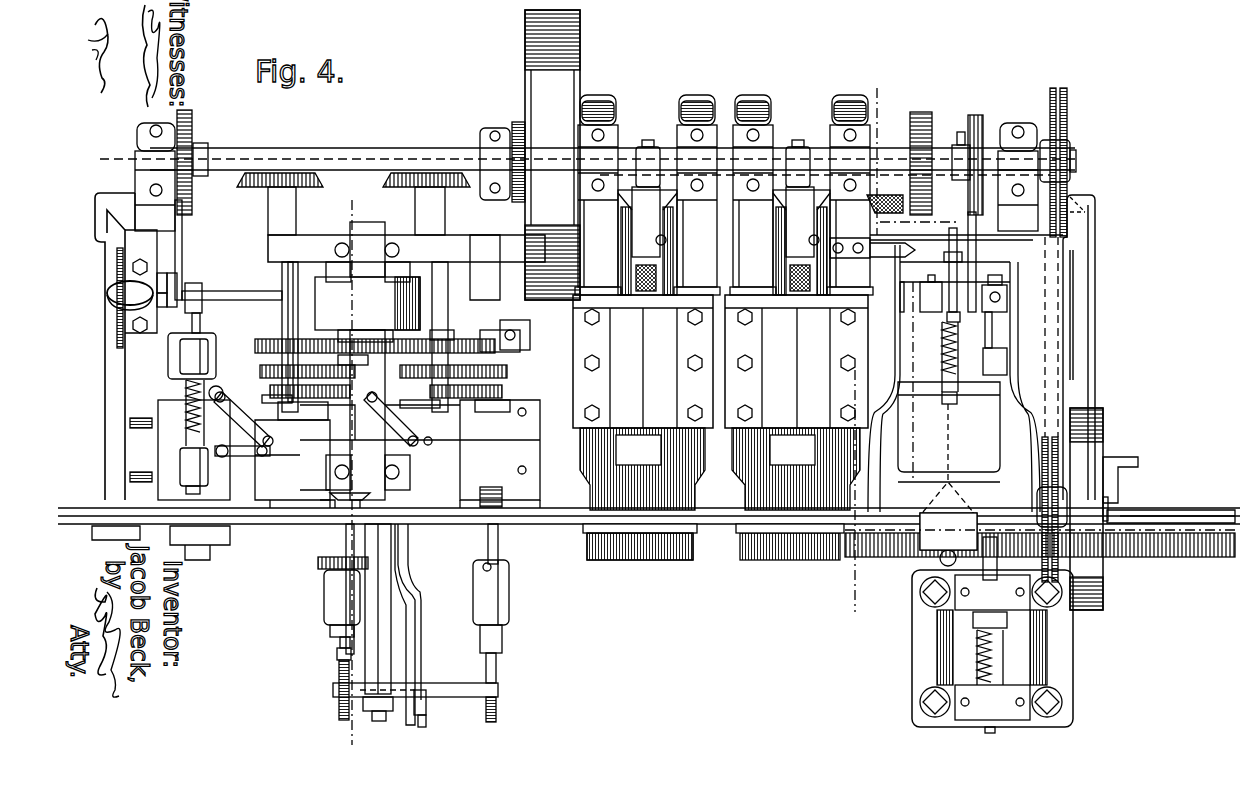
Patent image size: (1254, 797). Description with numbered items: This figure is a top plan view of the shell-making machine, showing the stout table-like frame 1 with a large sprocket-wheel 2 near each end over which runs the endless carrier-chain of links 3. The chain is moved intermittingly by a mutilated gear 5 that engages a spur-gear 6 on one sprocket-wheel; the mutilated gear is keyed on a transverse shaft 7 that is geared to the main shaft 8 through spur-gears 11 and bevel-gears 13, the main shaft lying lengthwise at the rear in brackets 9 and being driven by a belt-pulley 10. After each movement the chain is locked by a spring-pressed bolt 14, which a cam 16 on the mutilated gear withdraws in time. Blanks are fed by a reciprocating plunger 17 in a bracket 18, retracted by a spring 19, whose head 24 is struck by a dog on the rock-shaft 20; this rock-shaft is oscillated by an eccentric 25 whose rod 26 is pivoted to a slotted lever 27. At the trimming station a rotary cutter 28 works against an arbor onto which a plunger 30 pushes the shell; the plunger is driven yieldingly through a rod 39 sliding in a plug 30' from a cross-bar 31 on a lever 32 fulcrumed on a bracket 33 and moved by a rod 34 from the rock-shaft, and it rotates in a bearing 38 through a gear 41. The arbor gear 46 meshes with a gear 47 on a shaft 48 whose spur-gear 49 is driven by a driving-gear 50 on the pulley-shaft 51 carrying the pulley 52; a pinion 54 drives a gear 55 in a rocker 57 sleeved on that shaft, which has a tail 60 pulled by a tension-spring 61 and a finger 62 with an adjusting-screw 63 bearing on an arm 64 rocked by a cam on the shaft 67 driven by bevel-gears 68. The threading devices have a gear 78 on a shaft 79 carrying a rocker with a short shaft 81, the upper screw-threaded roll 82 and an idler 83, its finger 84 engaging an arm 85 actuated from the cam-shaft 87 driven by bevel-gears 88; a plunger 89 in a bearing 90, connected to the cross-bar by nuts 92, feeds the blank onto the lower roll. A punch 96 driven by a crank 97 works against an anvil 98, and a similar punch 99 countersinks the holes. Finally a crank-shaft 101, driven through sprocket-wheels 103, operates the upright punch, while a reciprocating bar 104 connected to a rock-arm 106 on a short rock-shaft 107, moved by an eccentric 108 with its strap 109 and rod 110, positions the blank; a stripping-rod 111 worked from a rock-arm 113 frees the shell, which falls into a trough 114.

The frame 1 is at (105, 256).
The sprocket-wheel 2 is at (210, 540).
The links 3 is at (540, 512).
The mutilated gear 5 is at (900, 560).
The spur-gear 6 is at (1186, 555).
The shaft 7 is at (840, 93).
The main shaft 8 is at (385, 152).
The brackets 9 is at (135, 143).
The belt-pulley 10 is at (525, 62).
The spur-gears 11 is at (924, 112).
The bevel-gears 13 is at (880, 205).
The spring-pressed bolt 14 is at (975, 622).
The cam 16 is at (800, 560).
The reciprocating plunger 17 is at (200, 323).
The bracket 18 is at (182, 360).
The spring 19 is at (186, 414).
The rock-shaft 20 is at (222, 290).
The head 24 is at (184, 308).
The eccentric 25 is at (193, 128).
The rod 26 is at (182, 246).
The lever 27 is at (162, 272).
The rotary cutter 28 is at (364, 497).
The reciprocating plunger 30 is at (327, 589).
The plug 30' is at (325, 648).
The cross-bar 31 is at (456, 686).
The lever 32 is at (418, 704).
The bracket 33 is at (416, 612).
The rod 34 is at (378, 660).
The bearing 38 is at (326, 598).
The rod 39 is at (338, 667).
The gear 41 is at (320, 565).
The gear 46 is at (343, 358).
The gear 47 is at (262, 369).
The shaft 48 is at (290, 312).
The spur-gear 49 is at (256, 343).
The driving-gear 50 is at (344, 338).
The pulley-shaft 51 is at (367, 415).
The pulley 52 is at (367, 303).
The pinion 54 is at (280, 386).
The gear 55 is at (300, 398).
The rocker 57 is at (300, 442).
The tail 60 is at (222, 456).
The tension-spring 61 is at (217, 445).
The finger 62 is at (240, 420).
The adjusting-screw 63 is at (226, 399).
The arm 64 is at (382, 398).
The shaft 67 is at (282, 275).
The bevel-gears 68 is at (270, 190).
The gear 78 is at (483, 345).
The shaft 79 is at (440, 330).
The short shaft 81 is at (512, 402).
The upper screw-threaded roll 82 is at (502, 497).
The idler 83 is at (526, 414).
The finger 84 is at (398, 419).
The arm 85 is at (421, 407).
The cam-shaft 87 is at (448, 280).
The bevel-gears 88 is at (452, 190).
The plunger 89 is at (499, 548).
The bearing 90 is at (508, 593).
The nuts 92 is at (499, 690).
The punch 96 is at (643, 373).
The crank 97 is at (646, 147).
The anvil 98 is at (663, 560).
The punch 99 is at (796, 325).
The crank-shaft 101 is at (1109, 508).
The sprocket-wheels 103 is at (1064, 130).
The reciprocating bar 104 is at (988, 343).
The rock-arm 106 is at (990, 313).
The rock-shaft 107 is at (926, 313).
The eccentric 108 is at (960, 145).
The strap 109 is at (976, 115).
The rod 110 is at (976, 254).
The stripping-rod 111 is at (949, 272).
The rock-arm 113 is at (944, 335).
The trough 114 is at (1120, 478).